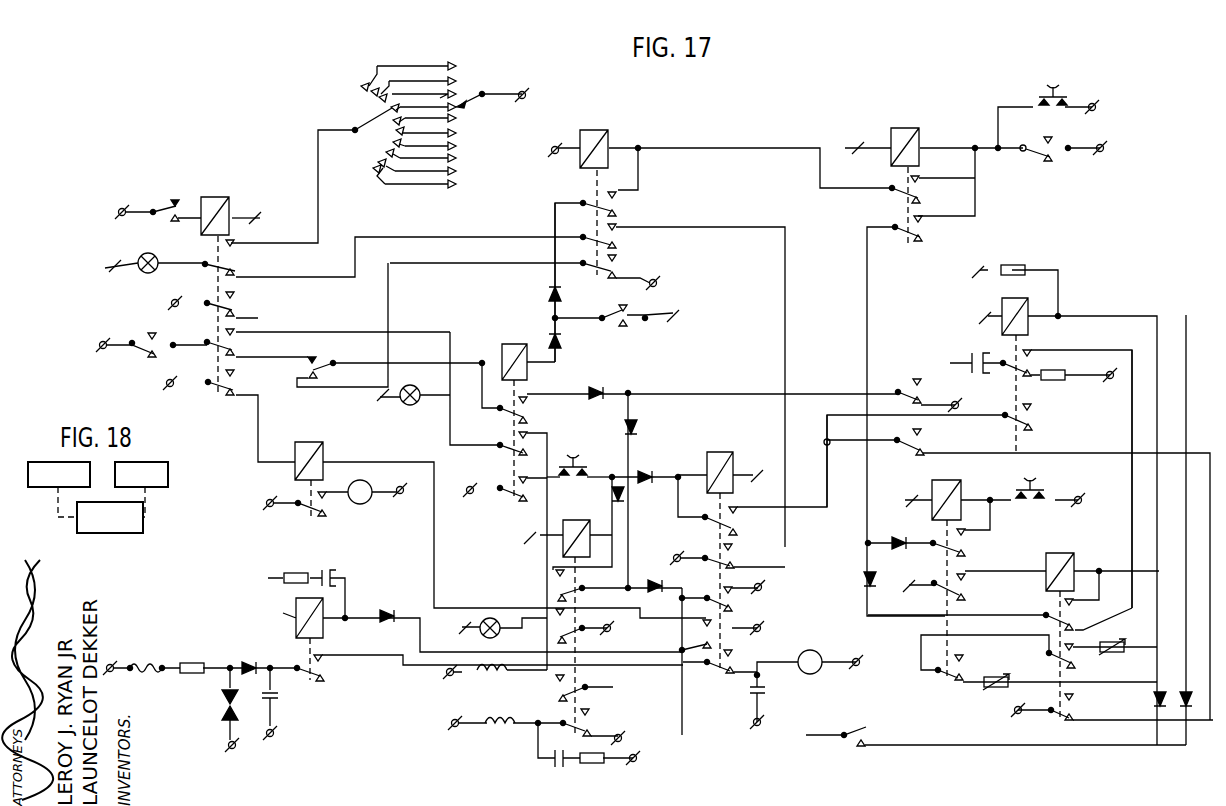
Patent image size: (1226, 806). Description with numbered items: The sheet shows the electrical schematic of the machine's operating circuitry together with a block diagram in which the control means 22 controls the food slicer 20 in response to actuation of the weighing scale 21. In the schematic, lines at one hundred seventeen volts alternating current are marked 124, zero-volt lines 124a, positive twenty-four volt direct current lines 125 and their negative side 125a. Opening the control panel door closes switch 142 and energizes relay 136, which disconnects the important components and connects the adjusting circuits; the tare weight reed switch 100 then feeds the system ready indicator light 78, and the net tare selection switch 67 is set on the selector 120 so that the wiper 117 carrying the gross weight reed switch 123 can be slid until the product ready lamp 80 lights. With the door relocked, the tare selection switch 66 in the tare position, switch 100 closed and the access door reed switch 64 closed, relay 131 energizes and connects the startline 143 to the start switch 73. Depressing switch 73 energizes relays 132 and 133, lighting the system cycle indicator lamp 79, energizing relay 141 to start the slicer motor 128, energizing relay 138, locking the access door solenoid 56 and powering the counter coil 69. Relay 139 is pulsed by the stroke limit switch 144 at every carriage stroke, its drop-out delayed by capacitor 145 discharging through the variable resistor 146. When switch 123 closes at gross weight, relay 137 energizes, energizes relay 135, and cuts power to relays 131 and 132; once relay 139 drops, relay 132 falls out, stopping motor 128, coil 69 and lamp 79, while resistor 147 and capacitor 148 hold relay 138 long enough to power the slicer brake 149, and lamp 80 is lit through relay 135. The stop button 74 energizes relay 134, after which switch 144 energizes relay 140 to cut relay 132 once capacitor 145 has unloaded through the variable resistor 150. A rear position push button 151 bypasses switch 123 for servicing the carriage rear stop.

In FIG. 17, the stepping switch 120 is at (449, 60).
In FIG. 17, the wiper 117 is at (472, 96).
In FIG. 17, the net tare selection switch 67 is at (372, 126).
In FIG. 17, the positive 24-volt D.C. lines 125 is at (122, 208).
In FIG. 17, the negative D.C. lines 125a is at (950, 180).
In FIG. 17, the 117-volt A.C. lines 124 is at (170, 386).
In FIG. 17, the zero-volt A.C. lines 124a is at (268, 734).
In FIG. 17, the switch 142 is at (164, 205).
In FIG. 17, the relay 136 is at (218, 197).
In FIG. 17, the product ready indicator lamp 80 is at (154, 258).
In FIG. 17, the relay 135 is at (603, 132).
In FIG. 17, the relay 137 is at (905, 128).
In FIG. 17, the rear position push button 151 is at (1047, 87).
In FIG. 17, the gross weight reed switch 123 is at (1032, 159).
In FIG. 17, the tare weight reed switch 100 is at (149, 357).
In FIG. 17, the tare selection switch 66 is at (333, 362).
In FIG. 17, the relay 131 is at (513, 344).
In FIG. 17, the access door reed switch 64 is at (628, 326).
In FIG. 17, the system ready indicator light 78 is at (404, 406).
In FIG. 17, the relay 141 is at (307, 442).
In FIG. 17, the startline 143 is at (552, 475).
In FIG. 17, the start switch 73 is at (576, 454).
In FIG. 17, the relay 133 is at (574, 520).
In FIG. 17, the relay 132 is at (718, 451).
In FIG. 17, the slicer motor 128 is at (358, 504).
In FIG. 17, the resistor 147 is at (292, 570).
In FIG. 17, the capacitor 148 is at (325, 570).
In FIG. 17, the relay 138 is at (300, 596).
In FIG. 17, the system cycle indicator lamp 79 is at (493, 618).
In FIG. 17, the relay 139 is at (1029, 318).
In FIG. 17, the capacitor 145 is at (988, 345).
In FIG. 17, the relay 134 is at (950, 482).
In FIG. 17, the stop button 74 is at (1029, 478).
In FIG. 17, the relay 140 is at (1070, 553).
In FIG. 17, the variable resistor 146 is at (996, 675).
In FIG. 17, the variable resistor 150 is at (1112, 656).
In FIG. 17, the slicer brake 149 is at (816, 659).
In FIG. 17, the stroke limit switch 144 is at (852, 735).
In FIG. 17, the counter coil 69 is at (490, 673).
In FIG. 17, the solenoid 56 is at (501, 728).
In FIG. 18, the food slicer 20 is at (148, 460).
In FIG. 18, the weighing scale 21 is at (56, 460).
In FIG. 18, the control means 22 is at (120, 533).